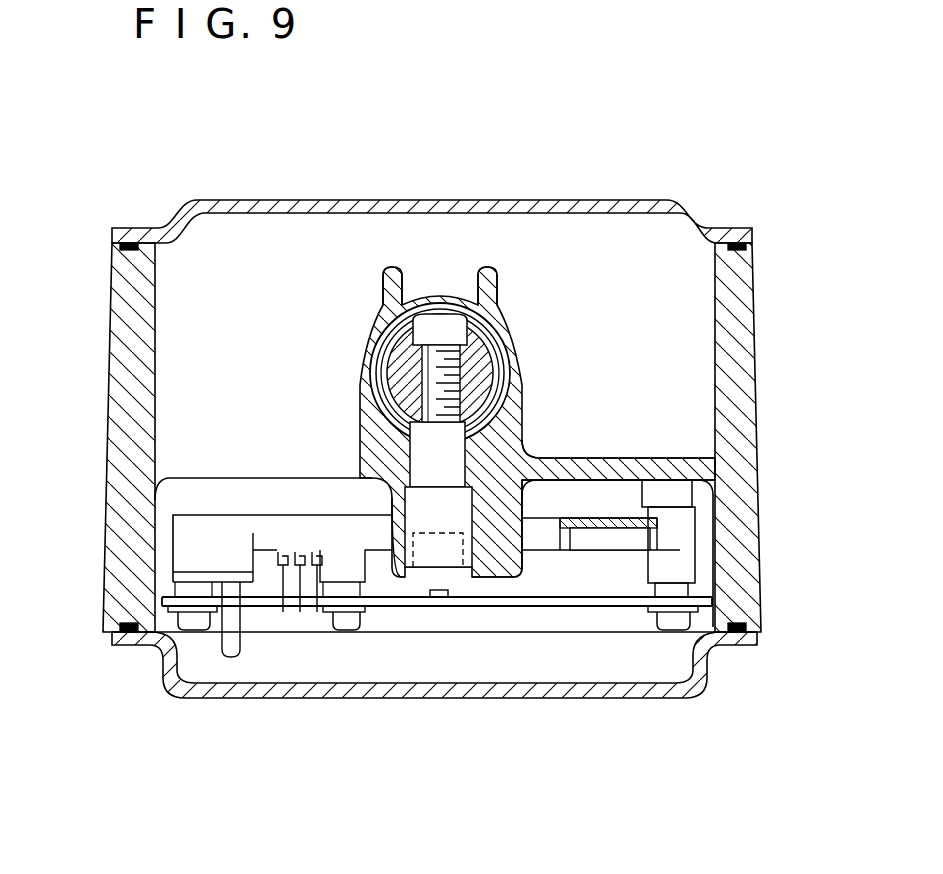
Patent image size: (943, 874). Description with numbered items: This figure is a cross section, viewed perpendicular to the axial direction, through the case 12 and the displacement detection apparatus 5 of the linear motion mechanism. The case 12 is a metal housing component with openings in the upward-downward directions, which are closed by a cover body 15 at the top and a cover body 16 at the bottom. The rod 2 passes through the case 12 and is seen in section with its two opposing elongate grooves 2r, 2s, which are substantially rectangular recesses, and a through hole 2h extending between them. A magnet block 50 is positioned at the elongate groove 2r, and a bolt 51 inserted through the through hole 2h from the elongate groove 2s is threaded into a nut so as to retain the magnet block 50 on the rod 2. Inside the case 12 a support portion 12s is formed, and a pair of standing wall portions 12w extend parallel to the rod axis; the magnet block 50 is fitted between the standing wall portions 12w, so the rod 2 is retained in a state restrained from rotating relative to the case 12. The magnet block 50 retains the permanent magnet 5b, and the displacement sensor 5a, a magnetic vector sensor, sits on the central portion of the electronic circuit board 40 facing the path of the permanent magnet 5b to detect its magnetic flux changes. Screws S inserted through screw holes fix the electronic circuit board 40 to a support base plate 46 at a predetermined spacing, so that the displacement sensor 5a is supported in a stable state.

The rod 2 is at (393, 372).
The through hole 2h is at (383, 285).
The elongate groove 2s is at (461, 345).
The elongate groove 2r is at (462, 412).
The bolt 51 is at (439, 315).
The magnet block 50 is at (404, 467).
The cover body 15 is at (660, 203).
The cover body 16 is at (663, 690).
The case 12 is at (753, 463).
The support portion 12s is at (612, 470).
The standing wall portions 12w is at (400, 520).
The displacement detection apparatus 5 is at (624, 359).
The displacement sensor 5a is at (440, 606).
The permanent magnet 5b is at (450, 555).
The support base plate 46 is at (200, 543).
The electronic circuit board 40 is at (373, 606).
The screws S is at (195, 630).